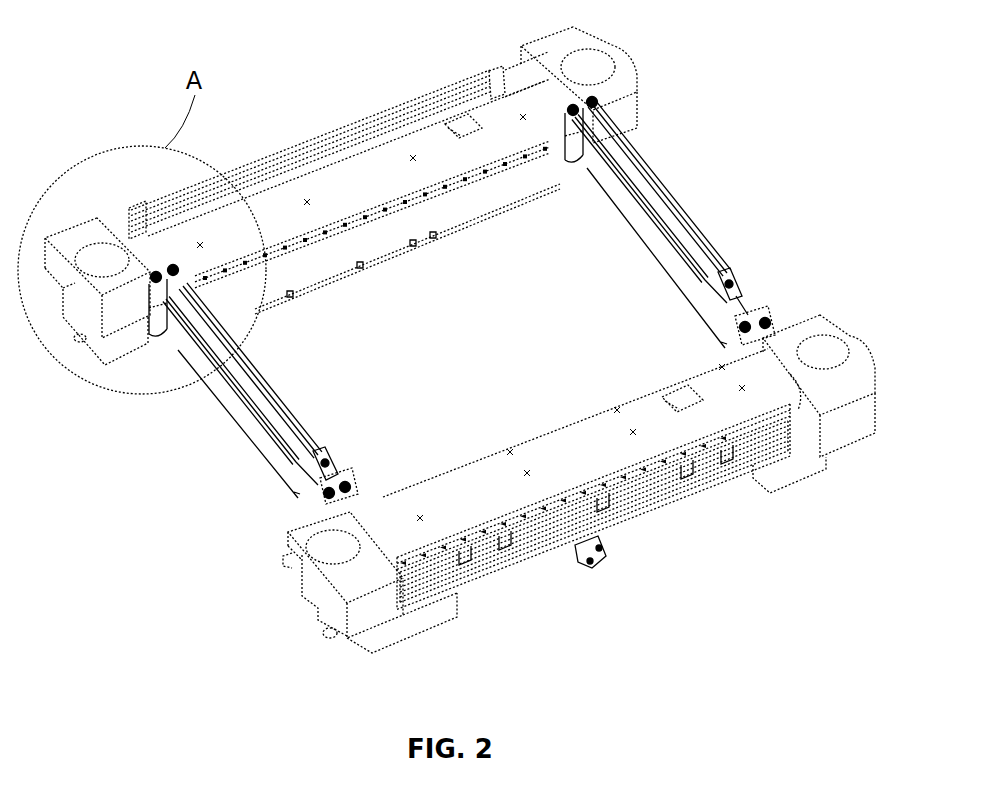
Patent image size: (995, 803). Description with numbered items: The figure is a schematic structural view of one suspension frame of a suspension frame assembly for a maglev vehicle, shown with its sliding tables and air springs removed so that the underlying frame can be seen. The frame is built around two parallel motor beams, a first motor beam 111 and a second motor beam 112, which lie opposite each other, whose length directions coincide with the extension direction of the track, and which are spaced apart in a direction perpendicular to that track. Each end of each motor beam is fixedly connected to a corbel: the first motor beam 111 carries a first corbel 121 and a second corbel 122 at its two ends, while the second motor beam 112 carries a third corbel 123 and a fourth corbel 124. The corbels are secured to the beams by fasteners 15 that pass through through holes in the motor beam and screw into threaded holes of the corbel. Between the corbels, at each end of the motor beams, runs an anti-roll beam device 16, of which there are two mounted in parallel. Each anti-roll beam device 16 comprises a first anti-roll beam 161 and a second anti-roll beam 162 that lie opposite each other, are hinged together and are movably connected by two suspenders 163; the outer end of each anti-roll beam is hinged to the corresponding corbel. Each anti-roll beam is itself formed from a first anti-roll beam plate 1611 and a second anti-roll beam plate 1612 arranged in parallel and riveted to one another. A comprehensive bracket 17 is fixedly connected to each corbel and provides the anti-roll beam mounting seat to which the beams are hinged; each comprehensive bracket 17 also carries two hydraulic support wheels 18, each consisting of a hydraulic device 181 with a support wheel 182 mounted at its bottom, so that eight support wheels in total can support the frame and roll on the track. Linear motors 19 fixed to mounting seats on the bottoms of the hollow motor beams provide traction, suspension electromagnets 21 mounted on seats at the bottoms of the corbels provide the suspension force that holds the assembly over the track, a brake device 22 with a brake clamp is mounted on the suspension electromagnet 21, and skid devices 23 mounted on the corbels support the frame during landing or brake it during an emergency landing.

The first motor beam 111 is at (345, 182).
The second motor beam 112 is at (493, 495).
The first corbel 121 is at (85, 232).
The second corbel 122 is at (620, 86).
The third corbel 123 is at (297, 560).
The fourth corbel 124 is at (823, 460).
The fastener 15 is at (790, 384).
The anti-roll beam device 16 is at (508, 302).
The first anti-roll beam 161 is at (477, 293).
The first anti-roll beam plate 1611 is at (250, 370).
The second anti-roll beam plate 1612 is at (247, 395).
The second anti-roll beam 162 is at (566, 381).
The suspender 163 is at (728, 268).
The comprehensive bracket 17 is at (163, 307).
The hydraulic support wheel 18 is at (365, 276).
The hydraulic device 181 is at (578, 163).
The support wheel 182 is at (563, 157).
The linear motor 19 is at (637, 487).
The suspension electromagnet 21 is at (390, 260).
The brake device 22 is at (590, 563).
The skid device 23 is at (118, 352).